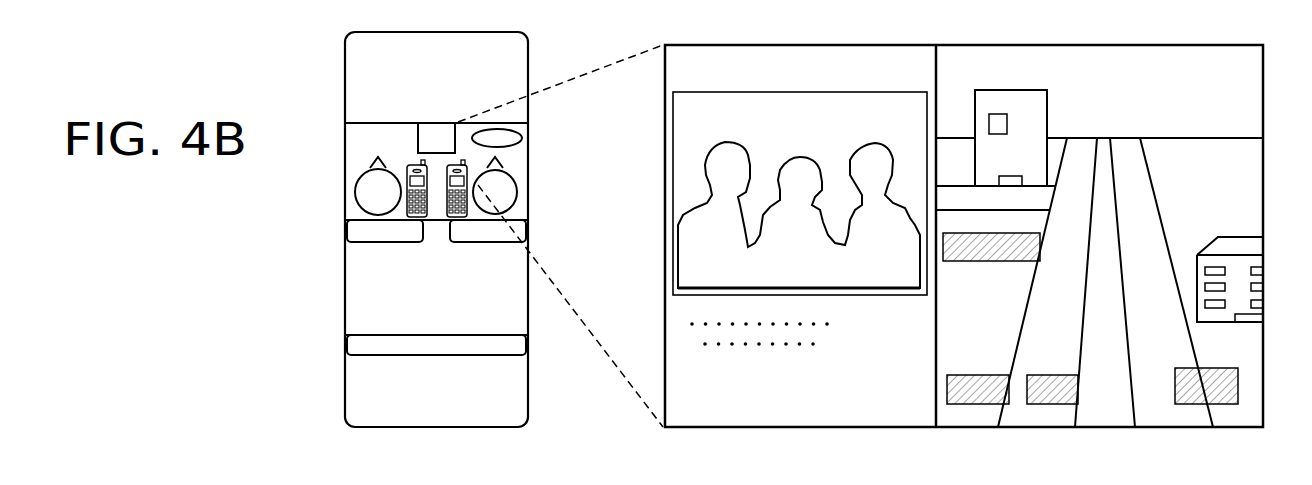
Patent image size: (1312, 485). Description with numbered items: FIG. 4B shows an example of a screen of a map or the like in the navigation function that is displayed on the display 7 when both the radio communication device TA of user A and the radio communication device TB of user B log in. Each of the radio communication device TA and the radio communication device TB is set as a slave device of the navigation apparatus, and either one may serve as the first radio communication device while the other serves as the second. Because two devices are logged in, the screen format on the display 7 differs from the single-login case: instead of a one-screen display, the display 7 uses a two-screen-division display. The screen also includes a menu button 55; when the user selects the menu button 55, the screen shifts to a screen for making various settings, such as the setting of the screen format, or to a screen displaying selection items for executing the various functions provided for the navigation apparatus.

The display 7 is at (434, 123).
The menu button 55 is at (1238, 388).
The radio communication device TA is at (466, 210).
The radio communication device TB is at (408, 210).